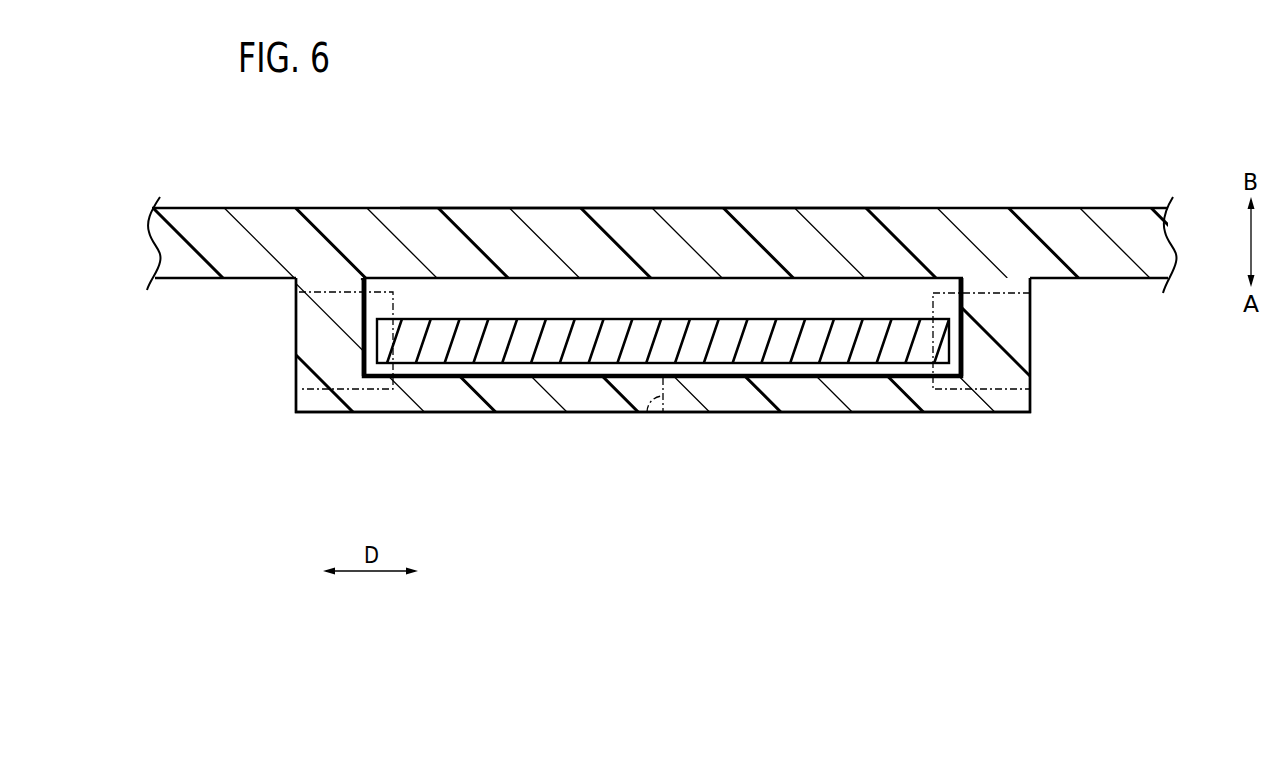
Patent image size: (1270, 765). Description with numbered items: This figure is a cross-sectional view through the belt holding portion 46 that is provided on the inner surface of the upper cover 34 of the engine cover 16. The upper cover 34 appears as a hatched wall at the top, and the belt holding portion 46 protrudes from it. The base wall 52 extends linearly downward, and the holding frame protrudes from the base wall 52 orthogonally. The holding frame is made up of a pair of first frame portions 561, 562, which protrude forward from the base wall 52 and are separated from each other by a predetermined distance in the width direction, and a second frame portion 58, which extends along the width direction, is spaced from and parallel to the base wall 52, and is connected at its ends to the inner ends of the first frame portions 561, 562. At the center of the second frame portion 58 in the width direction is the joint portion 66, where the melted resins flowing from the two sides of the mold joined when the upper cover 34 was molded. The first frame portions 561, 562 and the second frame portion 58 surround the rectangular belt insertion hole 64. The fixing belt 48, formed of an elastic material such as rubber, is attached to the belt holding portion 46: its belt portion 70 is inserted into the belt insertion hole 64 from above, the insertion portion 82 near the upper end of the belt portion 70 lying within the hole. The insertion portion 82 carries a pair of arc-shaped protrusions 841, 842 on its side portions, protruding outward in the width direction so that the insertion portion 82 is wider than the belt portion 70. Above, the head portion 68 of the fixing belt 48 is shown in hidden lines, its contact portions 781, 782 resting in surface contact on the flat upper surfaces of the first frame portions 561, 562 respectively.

The upper cover 34 is at (684, 217).
The engine cover 16 is at (1039, 203).
The base wall 52 is at (621, 220).
The belt holding portion 46 is at (658, 383).
The first frame portion 561 is at (330, 340).
The first frame portion 562 is at (997, 342).
The second frame portion 58 is at (520, 400).
The joint portion 66 is at (648, 418).
The contact portion 781 is at (346, 390).
The contact portion 782 is at (964, 390).
The head portion 68 is at (364, 390).
The belt portion 70 is at (662, 313).
The insertion portion 82 is at (662, 327).
The protrusion 841 is at (381, 336).
The protrusion 842 is at (945, 336).
The fixing belt 48 is at (513, 303).
The belt insertion hole 64 is at (800, 298).